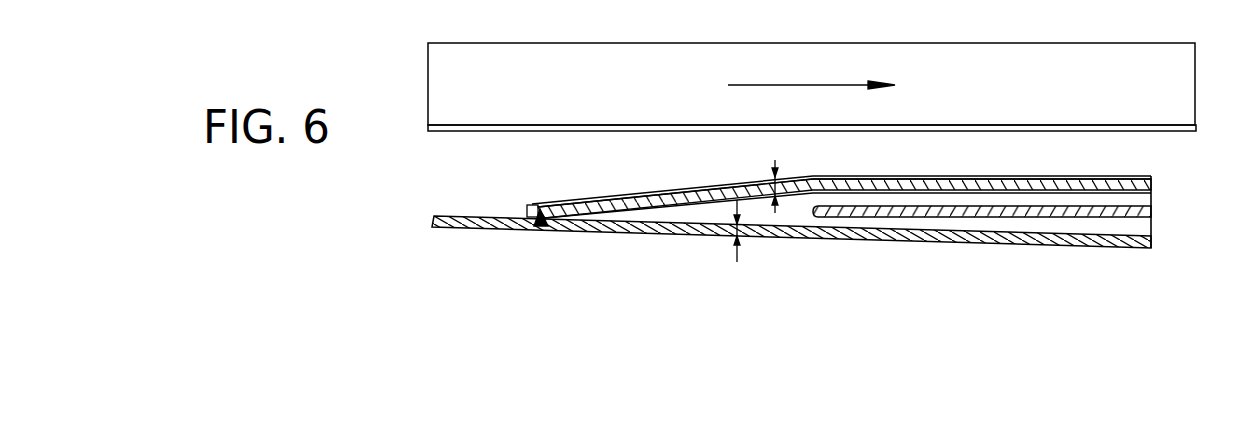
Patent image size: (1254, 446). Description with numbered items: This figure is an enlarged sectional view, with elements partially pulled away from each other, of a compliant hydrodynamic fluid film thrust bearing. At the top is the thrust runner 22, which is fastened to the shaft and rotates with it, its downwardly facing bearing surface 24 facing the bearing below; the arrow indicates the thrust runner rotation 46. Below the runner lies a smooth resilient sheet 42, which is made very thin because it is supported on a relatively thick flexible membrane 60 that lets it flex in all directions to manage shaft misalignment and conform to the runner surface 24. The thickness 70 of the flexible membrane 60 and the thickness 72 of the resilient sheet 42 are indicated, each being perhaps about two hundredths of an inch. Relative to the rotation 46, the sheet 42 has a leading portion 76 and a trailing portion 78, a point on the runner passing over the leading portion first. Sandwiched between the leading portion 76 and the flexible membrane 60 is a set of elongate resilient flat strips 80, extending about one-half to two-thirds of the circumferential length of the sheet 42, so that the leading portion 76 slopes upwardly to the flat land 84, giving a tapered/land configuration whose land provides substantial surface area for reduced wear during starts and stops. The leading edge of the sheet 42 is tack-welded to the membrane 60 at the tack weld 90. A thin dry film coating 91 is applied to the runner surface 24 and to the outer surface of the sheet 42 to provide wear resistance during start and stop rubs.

The thrust runner 22 is at (668, 103).
The bearing surface 24 is at (453, 131).
The thrust runner rotation 46 is at (792, 86).
The thin dry film coating 91 is at (1157, 125).
The leading portion 76 is at (637, 197).
The trailing portion 78 is at (876, 181).
The flat land 84 is at (825, 183).
The smooth resilient sheet 42 is at (955, 179).
The resilient flat strip 80 is at (1152, 211).
The flexible membrane 60 is at (575, 229).
The tack weld 90 is at (540, 206).
The thickness of resilient sheet 72 is at (775, 163).
The thickness of flexible membrane 70 is at (737, 255).